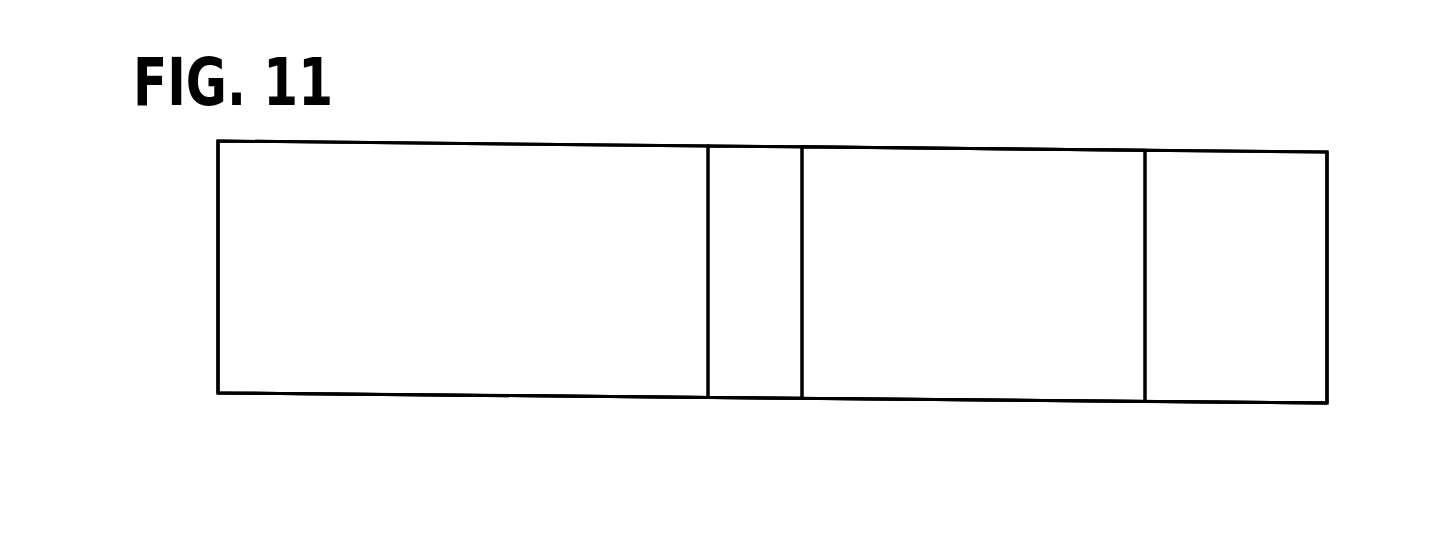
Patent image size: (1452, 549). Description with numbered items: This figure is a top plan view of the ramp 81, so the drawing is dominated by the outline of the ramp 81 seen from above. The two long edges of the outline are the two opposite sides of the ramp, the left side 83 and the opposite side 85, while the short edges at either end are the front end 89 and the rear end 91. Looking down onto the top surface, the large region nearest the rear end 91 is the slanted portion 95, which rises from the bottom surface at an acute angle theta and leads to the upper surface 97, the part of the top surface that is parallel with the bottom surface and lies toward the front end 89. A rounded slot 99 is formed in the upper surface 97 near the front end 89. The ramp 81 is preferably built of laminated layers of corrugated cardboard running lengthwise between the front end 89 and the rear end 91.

The ramp 81 is at (503, 407).
The left side 83 is at (1035, 148).
The side 85 is at (1033, 403).
The front end 89 is at (1327, 328).
The rear end 91 is at (215, 367).
The slanted portion 95 is at (522, 178).
The upper surface 97 is at (762, 172).
The rounded slot 99 is at (955, 333).